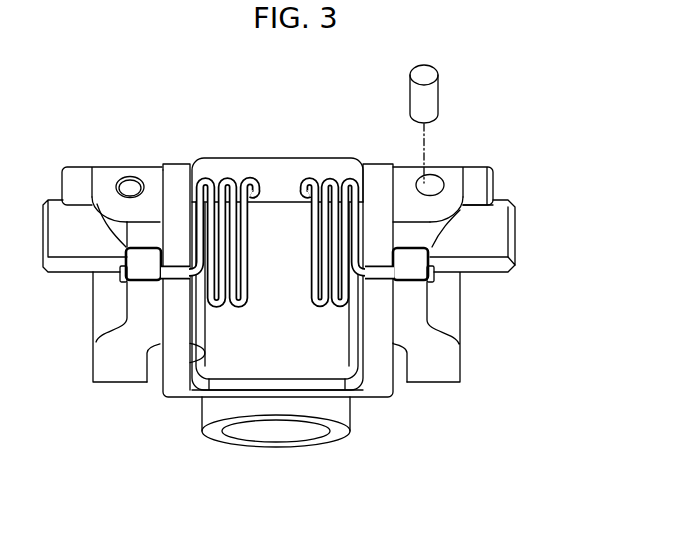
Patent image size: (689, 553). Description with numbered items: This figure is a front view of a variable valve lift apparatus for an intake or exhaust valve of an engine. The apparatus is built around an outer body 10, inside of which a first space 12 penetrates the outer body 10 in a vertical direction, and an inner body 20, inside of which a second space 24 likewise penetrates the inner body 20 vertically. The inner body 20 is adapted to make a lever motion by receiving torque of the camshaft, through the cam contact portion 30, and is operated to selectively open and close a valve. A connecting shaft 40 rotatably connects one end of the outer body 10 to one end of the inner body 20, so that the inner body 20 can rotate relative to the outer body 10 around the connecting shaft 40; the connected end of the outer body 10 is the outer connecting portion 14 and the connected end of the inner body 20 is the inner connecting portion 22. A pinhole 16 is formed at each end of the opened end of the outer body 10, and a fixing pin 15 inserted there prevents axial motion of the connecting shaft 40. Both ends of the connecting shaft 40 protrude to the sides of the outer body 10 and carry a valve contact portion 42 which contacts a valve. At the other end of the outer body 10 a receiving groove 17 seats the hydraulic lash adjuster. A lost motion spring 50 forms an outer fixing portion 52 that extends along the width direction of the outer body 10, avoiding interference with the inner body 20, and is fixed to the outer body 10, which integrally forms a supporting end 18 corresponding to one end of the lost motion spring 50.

The outer body 10 is at (133, 310).
The first space 12 is at (397, 372).
The outer connecting portion 14 is at (107, 173).
The fixing pin 15 is at (130, 188).
The pinhole 16 is at (430, 184).
The receiving groove 17 is at (273, 443).
The supporting end 18 is at (413, 273).
The inner body 20 is at (178, 386).
The inner connecting portion 22 is at (175, 170).
The second space 24 is at (197, 357).
The cam contact portion 30 is at (220, 370).
The connecting shaft 40 is at (500, 230).
The valve contact portion 42 is at (485, 268).
The lost motion spring 50 is at (299, 185).
The outer fixing portion 52 is at (380, 276).